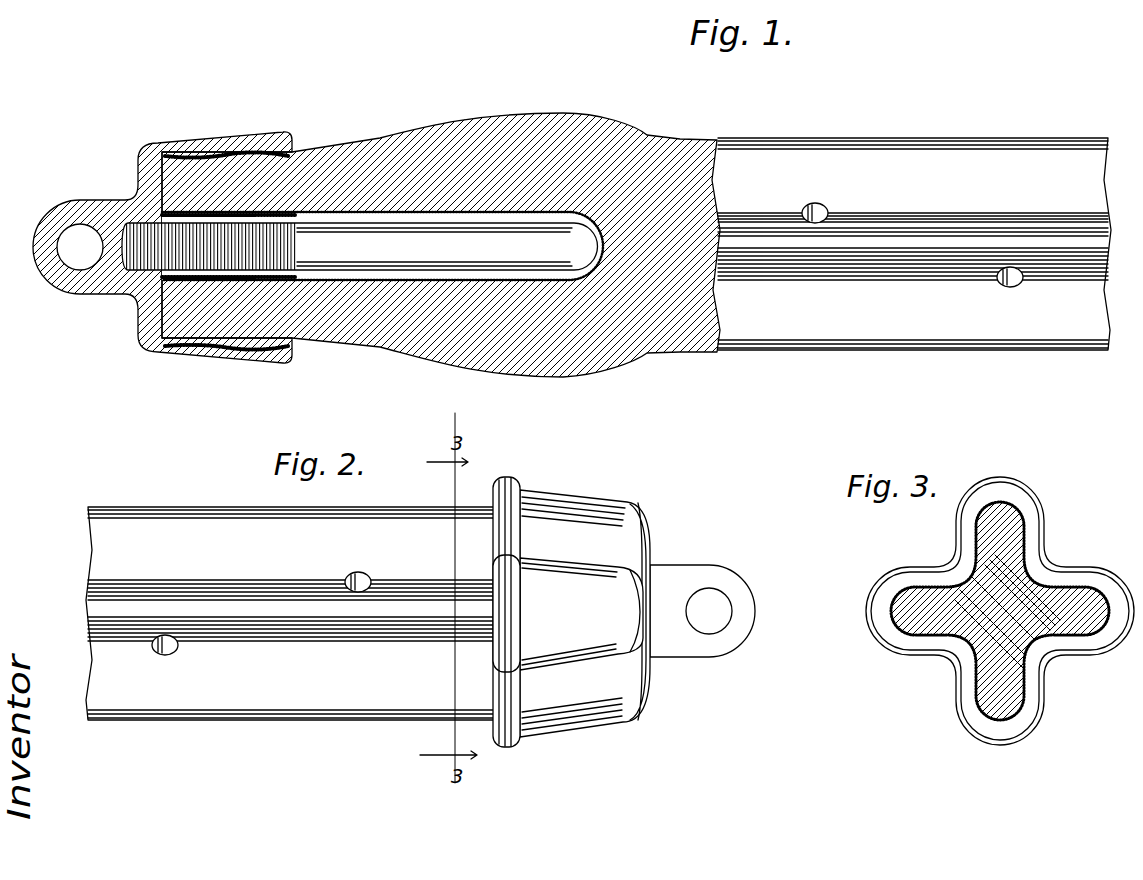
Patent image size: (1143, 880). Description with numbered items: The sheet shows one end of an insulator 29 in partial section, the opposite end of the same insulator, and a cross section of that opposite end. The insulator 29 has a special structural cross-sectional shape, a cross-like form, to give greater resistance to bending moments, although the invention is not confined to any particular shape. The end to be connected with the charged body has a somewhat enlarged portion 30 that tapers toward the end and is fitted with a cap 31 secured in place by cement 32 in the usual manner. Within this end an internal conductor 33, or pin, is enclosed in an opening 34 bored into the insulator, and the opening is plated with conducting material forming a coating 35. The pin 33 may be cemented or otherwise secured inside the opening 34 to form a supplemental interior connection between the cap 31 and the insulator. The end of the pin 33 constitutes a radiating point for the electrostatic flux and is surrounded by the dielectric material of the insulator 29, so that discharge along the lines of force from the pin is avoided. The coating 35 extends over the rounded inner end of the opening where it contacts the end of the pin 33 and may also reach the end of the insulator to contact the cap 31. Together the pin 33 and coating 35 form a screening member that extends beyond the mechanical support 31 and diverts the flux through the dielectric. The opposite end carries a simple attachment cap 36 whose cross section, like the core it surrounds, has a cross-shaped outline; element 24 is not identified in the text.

In FIG. 1, the insulator 29 is at (975, 152).
In FIG. 2, the insulator 29 is at (277, 685).
In FIG. 1, the enlarged portion 30 is at (580, 137).
In FIG. 1, the cap 31 is at (212, 145).
In FIG. 1, the cement 32 is at (266, 134).
In FIG. 1, the internal conductor 33 is at (315, 245).
In FIG. 1, the opening 34 is at (355, 279).
In FIG. 1, the coating 35 is at (441, 214).
In FIG. 2, the attachment cap 36 is at (570, 512).
In FIG. 3, the attachment cap 36 is at (920, 645).
In FIG. 3, the cross-shaped core 24 is at (1025, 545).